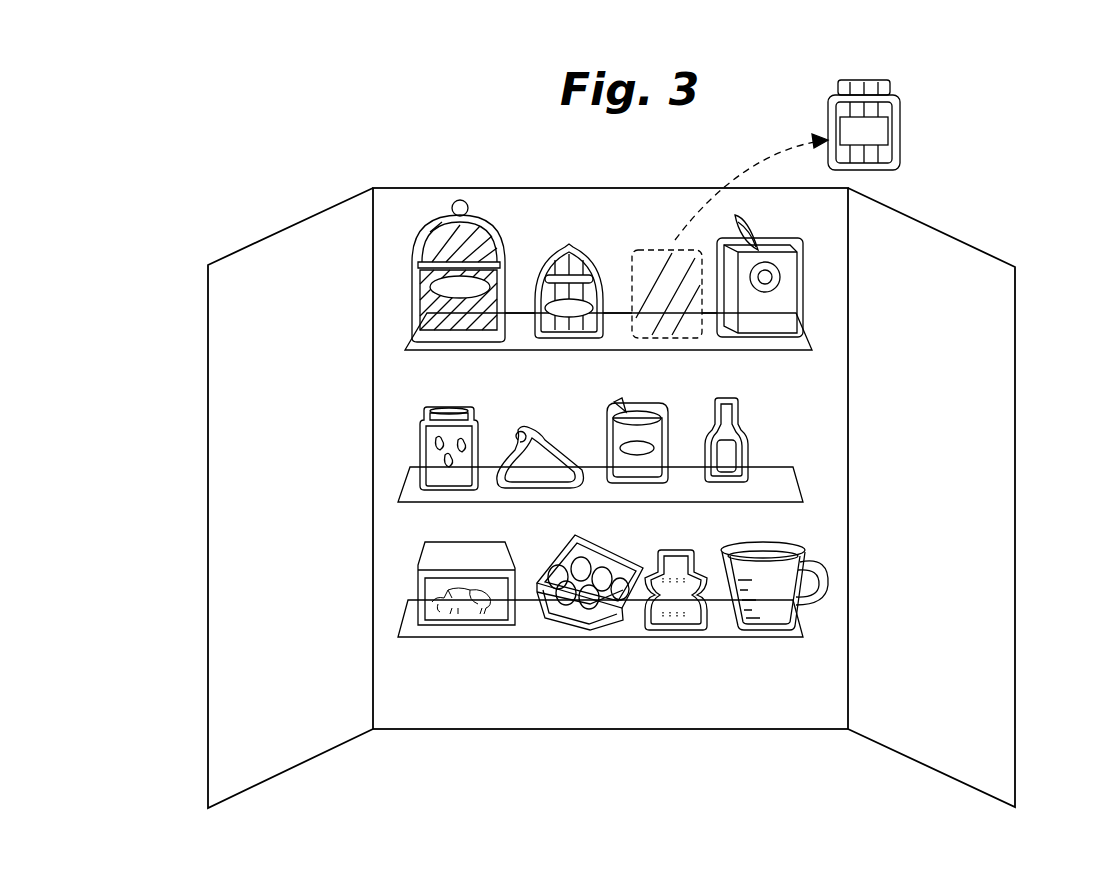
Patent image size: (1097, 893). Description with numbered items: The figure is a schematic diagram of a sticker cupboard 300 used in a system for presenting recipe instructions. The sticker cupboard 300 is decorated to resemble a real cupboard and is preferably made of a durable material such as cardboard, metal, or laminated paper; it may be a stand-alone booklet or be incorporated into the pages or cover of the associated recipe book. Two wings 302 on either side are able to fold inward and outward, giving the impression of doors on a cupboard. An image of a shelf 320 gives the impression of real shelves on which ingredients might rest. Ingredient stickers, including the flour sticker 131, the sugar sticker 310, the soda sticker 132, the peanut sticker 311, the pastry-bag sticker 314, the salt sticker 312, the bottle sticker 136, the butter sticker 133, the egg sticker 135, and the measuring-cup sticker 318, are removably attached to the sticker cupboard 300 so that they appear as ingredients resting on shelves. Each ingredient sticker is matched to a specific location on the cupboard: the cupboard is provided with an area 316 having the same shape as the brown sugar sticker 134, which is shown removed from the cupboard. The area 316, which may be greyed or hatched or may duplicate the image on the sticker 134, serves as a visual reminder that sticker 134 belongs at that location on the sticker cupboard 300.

The sticker cupboard 300 is at (392, 188).
The wings 302 is at (312, 770).
The shelf 320 is at (455, 347).
The ingredient sticker 131 is at (483, 238).
The ingredient sticker 310 is at (580, 250).
The area 316 is at (655, 248).
The ingredient sticker 132 is at (803, 292).
The ingredient sticker 134 is at (886, 110).
The ingredient sticker 311 is at (420, 455).
The ingredient sticker 314 is at (520, 482).
The ingredient sticker 312 is at (657, 420).
The ingredient sticker 136 is at (748, 441).
The ingredient sticker 133 is at (438, 563).
The ingredient sticker 135 is at (560, 610).
The ingredient sticker 318 is at (780, 615).